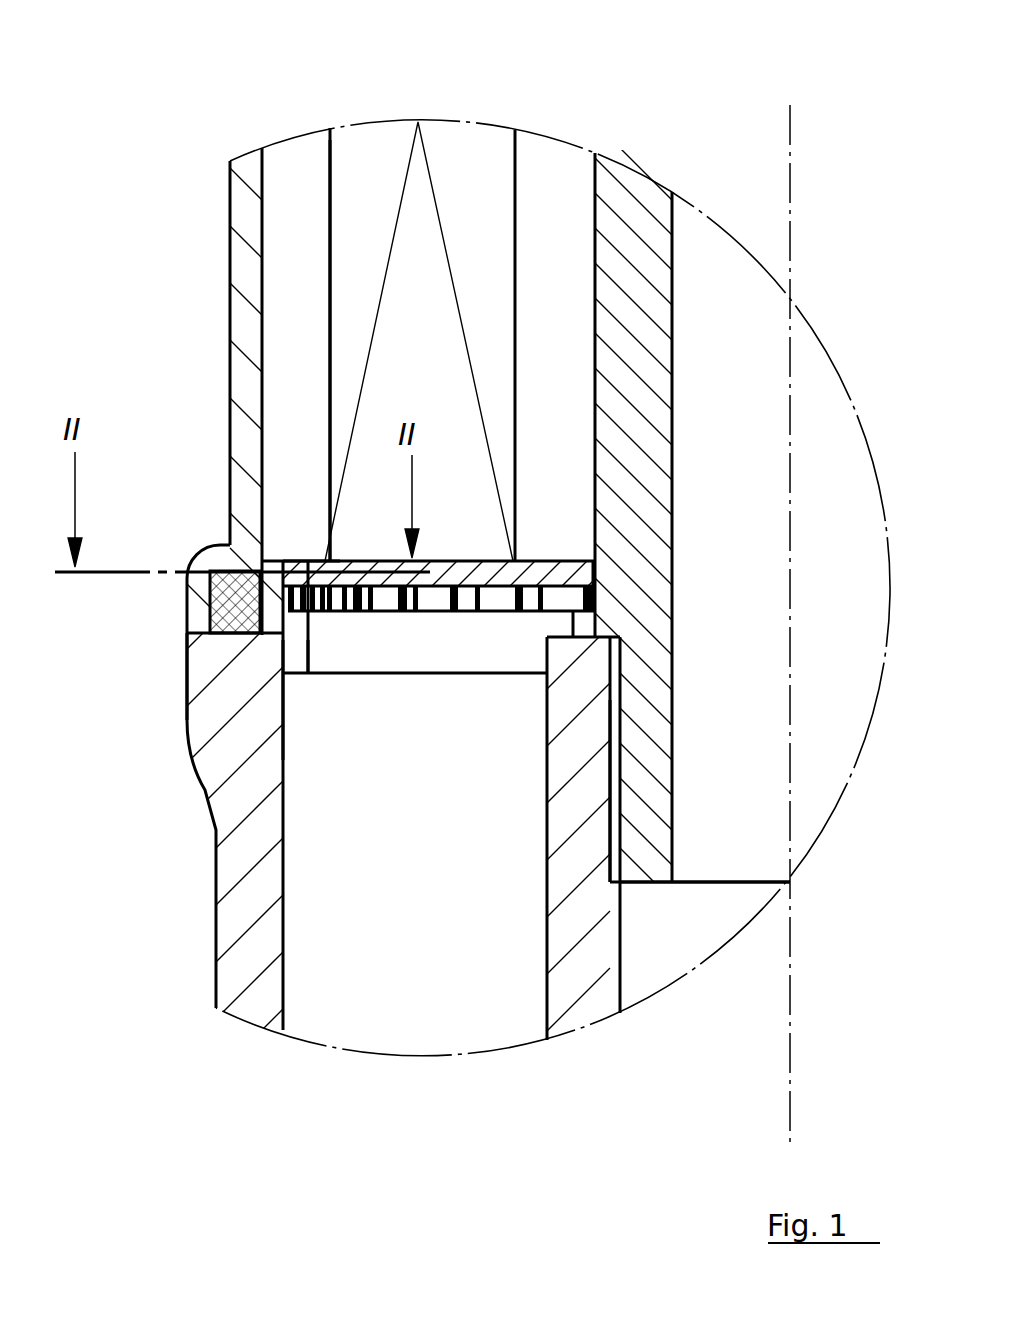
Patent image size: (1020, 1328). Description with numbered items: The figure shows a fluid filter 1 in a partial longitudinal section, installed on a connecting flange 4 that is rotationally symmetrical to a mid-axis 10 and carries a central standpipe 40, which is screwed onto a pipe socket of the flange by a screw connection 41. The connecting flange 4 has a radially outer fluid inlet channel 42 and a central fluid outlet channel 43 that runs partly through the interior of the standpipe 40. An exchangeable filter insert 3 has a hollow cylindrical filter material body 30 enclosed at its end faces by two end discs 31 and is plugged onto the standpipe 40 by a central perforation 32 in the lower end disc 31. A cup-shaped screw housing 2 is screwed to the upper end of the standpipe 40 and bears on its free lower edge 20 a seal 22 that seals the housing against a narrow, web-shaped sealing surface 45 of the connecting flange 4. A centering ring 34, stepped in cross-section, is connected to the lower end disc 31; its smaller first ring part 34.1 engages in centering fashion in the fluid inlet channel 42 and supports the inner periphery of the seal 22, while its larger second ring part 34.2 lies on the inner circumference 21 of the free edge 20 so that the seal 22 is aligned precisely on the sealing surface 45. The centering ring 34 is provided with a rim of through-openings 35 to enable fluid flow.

The fluid filter 1 is at (246, 103).
The screw housing 2 is at (246, 213).
The filter insert 3 is at (304, 339).
The connecting flange 4 is at (232, 802).
The mid-axis 10 is at (790, 143).
The free edge 20 is at (233, 533).
The inner circumference 21 is at (272, 548).
The seal 22 is at (208, 600).
The filter material body 30 is at (322, 380).
The end disc 31 is at (466, 577).
The central perforation 32 is at (585, 577).
The centering ring 34 is at (298, 612).
The first ring part 34.1 is at (302, 655).
The second ring part 34.2 is at (313, 561).
The through-openings 35 is at (293, 561).
The standpipe 40 is at (652, 410).
The screw connection 41 is at (598, 820).
The fluid inlet channel 42 is at (413, 808).
The fluid outlet channel 43 is at (727, 862).
The sealing surface 45 is at (187, 672).